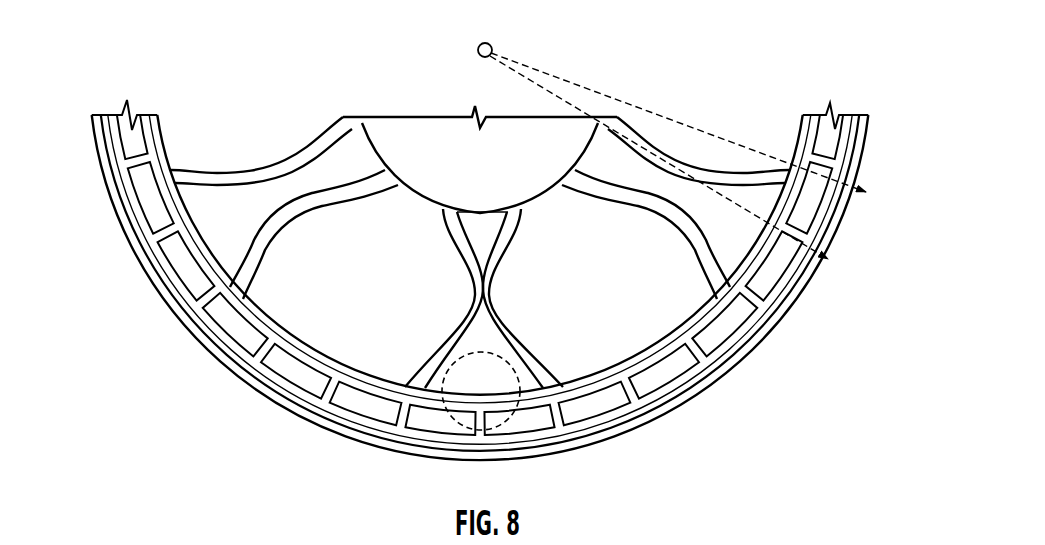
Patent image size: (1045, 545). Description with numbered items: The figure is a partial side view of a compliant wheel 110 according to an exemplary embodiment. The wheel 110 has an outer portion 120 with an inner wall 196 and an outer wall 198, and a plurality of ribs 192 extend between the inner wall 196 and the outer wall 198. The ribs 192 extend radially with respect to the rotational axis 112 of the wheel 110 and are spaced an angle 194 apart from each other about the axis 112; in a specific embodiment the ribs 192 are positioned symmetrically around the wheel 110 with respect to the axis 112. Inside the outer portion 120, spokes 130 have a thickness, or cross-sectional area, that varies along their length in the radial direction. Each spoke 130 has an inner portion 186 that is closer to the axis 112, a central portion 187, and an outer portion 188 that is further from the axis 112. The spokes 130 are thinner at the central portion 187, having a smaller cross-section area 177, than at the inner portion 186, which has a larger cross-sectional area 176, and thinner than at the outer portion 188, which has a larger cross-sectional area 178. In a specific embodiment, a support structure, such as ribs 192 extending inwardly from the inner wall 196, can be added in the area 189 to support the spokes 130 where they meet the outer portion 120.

The compliant wheel 110 is at (148, 57).
The rotational axis 112 is at (479, 43).
The outer portion 120 is at (828, 112).
The spokes 130 is at (504, 210).
The cross-sectional area of inner portion 176 is at (452, 224).
The cross-section area of central portion 177 is at (493, 290).
The cross-sectional area of outer portion 178 is at (428, 370).
The inner portion 186 is at (437, 242).
The central portion 187 is at (516, 302).
The outer portion 188 is at (421, 351).
The area 189 is at (522, 401).
The ribs 192 is at (203, 307).
The angle 194 is at (853, 234).
The inner wall 196 is at (808, 120).
The outer wall 198 is at (864, 117).